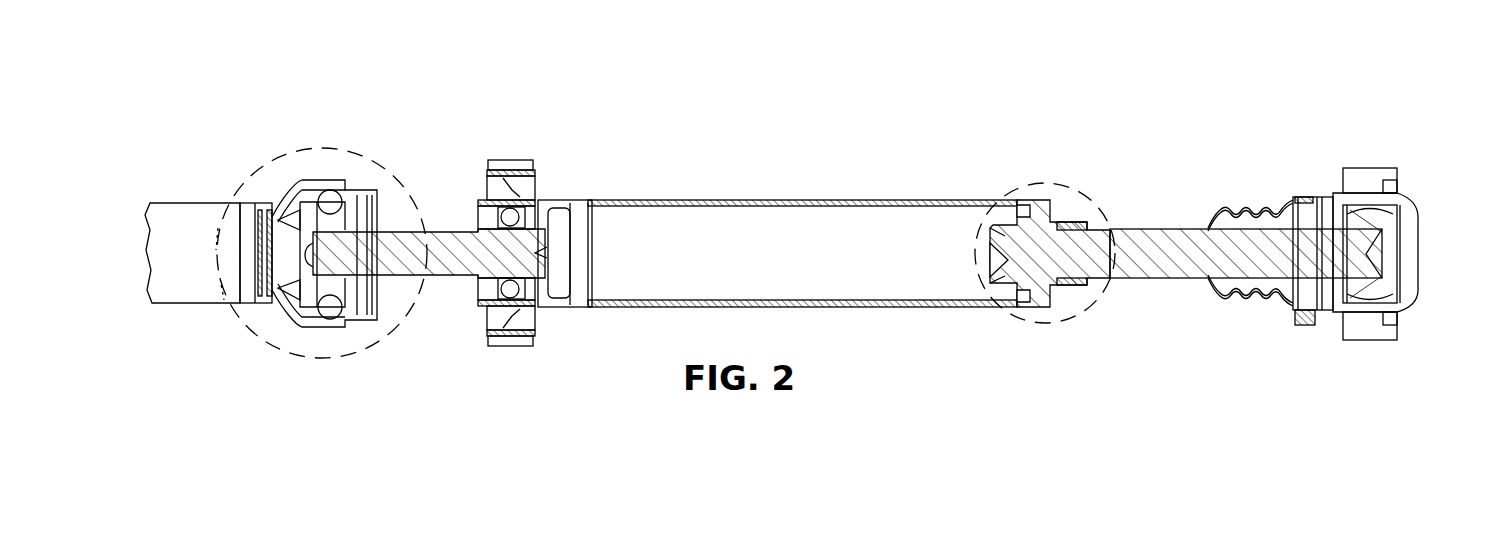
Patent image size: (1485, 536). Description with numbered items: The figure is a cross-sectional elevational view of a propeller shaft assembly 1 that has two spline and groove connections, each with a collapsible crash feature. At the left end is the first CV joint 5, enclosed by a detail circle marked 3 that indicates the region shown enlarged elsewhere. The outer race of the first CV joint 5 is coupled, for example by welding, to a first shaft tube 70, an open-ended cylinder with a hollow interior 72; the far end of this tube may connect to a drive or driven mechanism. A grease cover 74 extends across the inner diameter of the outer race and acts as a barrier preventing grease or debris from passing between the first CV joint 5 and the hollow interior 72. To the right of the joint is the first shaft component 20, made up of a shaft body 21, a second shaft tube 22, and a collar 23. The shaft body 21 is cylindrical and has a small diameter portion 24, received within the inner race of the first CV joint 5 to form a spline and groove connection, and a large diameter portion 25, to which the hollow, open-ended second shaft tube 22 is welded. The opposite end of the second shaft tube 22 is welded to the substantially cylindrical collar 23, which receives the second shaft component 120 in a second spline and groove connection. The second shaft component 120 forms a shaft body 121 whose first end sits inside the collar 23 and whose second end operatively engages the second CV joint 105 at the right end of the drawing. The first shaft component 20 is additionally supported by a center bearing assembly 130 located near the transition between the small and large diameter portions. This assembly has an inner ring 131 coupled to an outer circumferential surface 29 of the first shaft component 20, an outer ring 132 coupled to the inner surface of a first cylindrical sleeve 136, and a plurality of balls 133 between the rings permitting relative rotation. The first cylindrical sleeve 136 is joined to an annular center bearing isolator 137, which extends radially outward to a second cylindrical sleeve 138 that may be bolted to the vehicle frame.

The propeller shaft assembly 1 is at (1142, 97).
The detail view circle 3 is at (322, 148).
The first CV joint 5 is at (1052, 180).
The first shaft component 20 is at (398, 217).
The shaft body 21 is at (423, 282).
The second shaft tube 22 is at (786, 196).
The collar 23 is at (1043, 320).
The small diameter portion 24 is at (398, 283).
The large diameter portion 25 is at (588, 203).
The outer circumferential surface 29 is at (484, 228).
The first shaft tube 70 is at (198, 200).
The hollow interior 72 is at (200, 265).
The grease cover 74 is at (252, 203).
The second CV joint 105 is at (1320, 326).
The second shaft component 120 is at (1136, 222).
The shaft body 121 is at (1133, 283).
The center bearing assembly 130 is at (535, 260).
The inner ring 131 is at (553, 200).
The outer ring 132 is at (484, 185).
The balls 133 is at (522, 162).
The first cylindrical sleeve 136 is at (538, 306).
The center bearing isolator 137 is at (537, 326).
The second cylindrical sleeve 138 is at (508, 347).